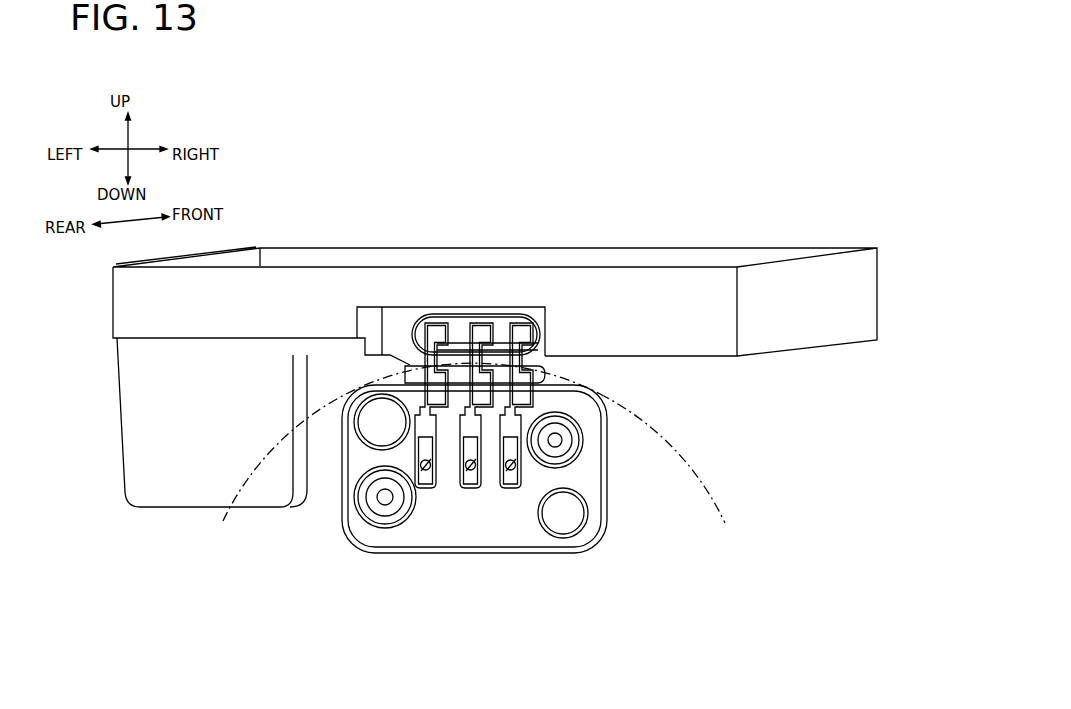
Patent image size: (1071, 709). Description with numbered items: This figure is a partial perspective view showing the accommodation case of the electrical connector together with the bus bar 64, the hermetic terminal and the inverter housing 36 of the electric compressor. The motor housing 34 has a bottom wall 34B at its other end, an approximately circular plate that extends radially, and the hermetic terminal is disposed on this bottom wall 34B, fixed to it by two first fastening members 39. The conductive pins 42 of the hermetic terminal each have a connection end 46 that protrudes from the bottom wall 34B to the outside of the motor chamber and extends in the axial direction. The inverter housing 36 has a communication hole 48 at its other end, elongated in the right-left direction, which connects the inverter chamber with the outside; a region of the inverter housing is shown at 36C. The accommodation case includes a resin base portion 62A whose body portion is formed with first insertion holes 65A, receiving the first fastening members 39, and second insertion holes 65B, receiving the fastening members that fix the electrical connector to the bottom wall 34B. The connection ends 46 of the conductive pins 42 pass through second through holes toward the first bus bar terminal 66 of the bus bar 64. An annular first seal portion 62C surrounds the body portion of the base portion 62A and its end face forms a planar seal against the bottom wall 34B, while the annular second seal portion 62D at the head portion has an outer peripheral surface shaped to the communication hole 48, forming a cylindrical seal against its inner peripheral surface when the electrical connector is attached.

The motor housing 34 is at (636, 402).
The bottom wall 34B is at (683, 460).
The inverter housing 36 is at (400, 244).
The side wall of case 36C is at (155, 310).
The first fastening member 39 is at (348, 496).
The conductive pin 42 is at (391, 450).
The connection end 46 is at (450, 478).
The communication hole 48 is at (456, 319).
The base portion 62A is at (603, 488).
The first seal portion 62C is at (603, 518).
The second seal portion 62D is at (494, 314).
The bus bar 64 is at (534, 396).
The first insertion hole 65A is at (573, 430).
The second insertion hole 65B is at (570, 513).
The first bus bar terminal 66 is at (468, 478).